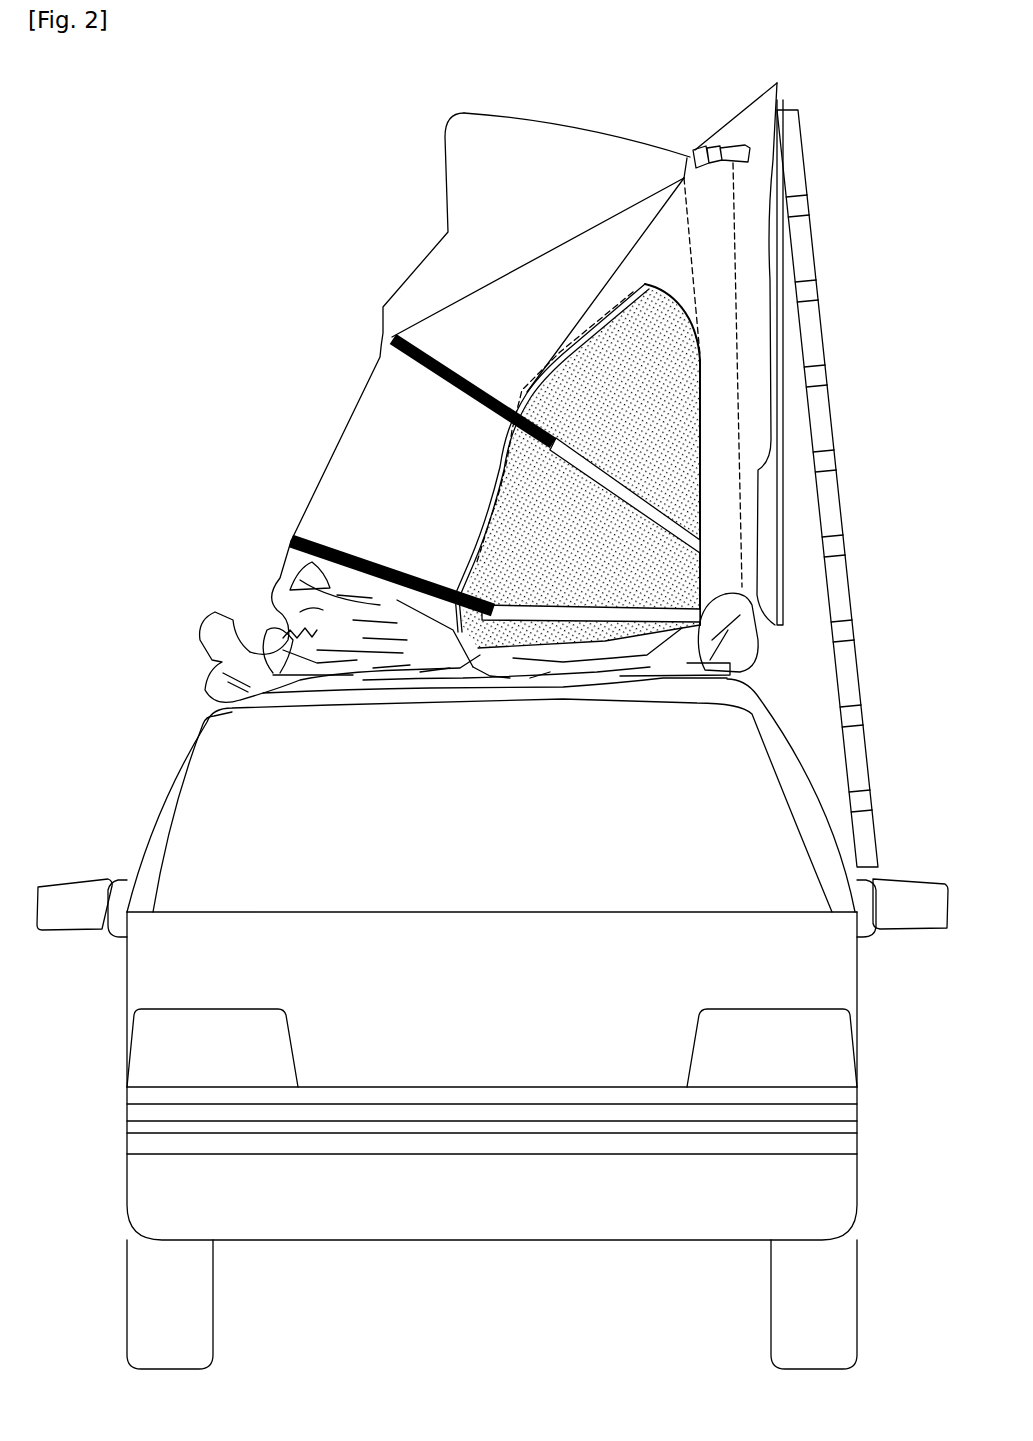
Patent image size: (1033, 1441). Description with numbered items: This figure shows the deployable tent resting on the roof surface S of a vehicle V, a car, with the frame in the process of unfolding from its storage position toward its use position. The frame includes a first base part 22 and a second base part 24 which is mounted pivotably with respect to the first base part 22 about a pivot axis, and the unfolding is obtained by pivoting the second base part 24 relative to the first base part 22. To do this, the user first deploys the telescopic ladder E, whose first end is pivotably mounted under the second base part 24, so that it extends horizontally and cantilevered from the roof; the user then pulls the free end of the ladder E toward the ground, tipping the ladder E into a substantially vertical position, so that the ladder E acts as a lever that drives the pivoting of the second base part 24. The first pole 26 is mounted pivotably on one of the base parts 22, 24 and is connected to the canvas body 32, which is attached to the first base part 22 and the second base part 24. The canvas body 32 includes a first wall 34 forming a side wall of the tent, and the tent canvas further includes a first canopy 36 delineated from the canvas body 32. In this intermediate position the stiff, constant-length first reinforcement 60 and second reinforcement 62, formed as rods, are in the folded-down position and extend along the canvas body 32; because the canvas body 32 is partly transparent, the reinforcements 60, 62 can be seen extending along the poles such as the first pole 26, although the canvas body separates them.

The first base part 22 is at (617, 477).
The second base part 24 is at (784, 610).
The first pole 26 is at (770, 160).
The canvas body 32 is at (713, 227).
The first wall 34 is at (670, 243).
The first canopy 36 is at (457, 318).
The first reinforcement 60 is at (348, 553).
The second reinforcement 62 is at (466, 378).
The telescopic ladder E is at (835, 410).
The surface S is at (693, 685).
The vehicle V is at (160, 798).